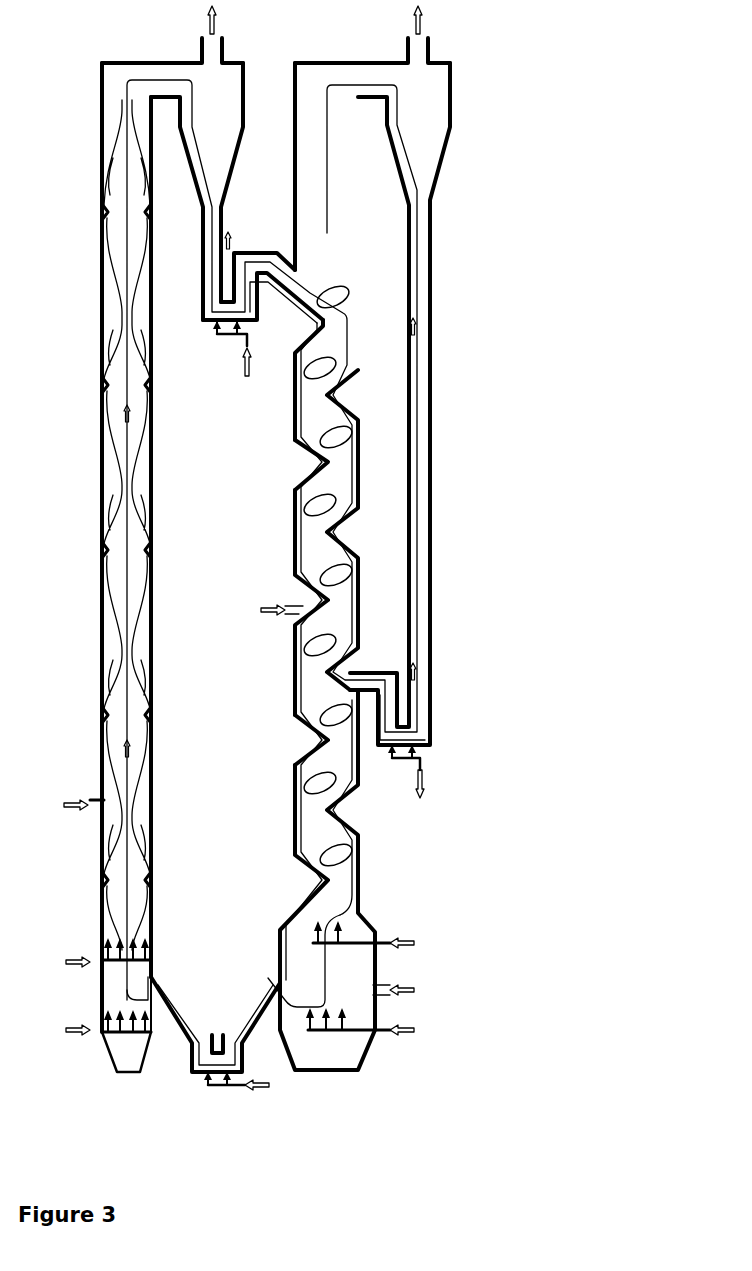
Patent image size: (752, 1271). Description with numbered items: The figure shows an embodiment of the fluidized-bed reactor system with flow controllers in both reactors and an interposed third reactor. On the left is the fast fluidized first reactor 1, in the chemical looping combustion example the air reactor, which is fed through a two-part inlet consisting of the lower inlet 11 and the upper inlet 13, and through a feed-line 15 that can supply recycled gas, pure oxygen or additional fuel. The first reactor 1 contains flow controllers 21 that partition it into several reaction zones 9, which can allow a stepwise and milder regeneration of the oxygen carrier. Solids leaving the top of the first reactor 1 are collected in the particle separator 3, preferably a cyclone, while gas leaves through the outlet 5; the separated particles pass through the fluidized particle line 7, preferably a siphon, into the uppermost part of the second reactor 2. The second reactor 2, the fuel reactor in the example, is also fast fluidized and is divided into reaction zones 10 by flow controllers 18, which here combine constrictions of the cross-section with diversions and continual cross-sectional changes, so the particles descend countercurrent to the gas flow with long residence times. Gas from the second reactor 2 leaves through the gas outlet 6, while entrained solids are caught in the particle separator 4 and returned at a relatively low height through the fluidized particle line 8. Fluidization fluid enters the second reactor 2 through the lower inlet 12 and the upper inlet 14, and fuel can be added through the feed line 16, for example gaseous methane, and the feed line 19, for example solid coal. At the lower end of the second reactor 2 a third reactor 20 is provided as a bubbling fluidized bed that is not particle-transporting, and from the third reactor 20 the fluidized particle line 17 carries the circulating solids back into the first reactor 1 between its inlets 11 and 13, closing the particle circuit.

The first reactor 1 is at (100, 590).
The second reactor 2 is at (295, 545).
The particle separator 3 is at (237, 165).
The particle separator 4 is at (393, 165).
The outlet 5 is at (205, 36).
The gas outlet 6 is at (408, 36).
The particle line 7 is at (212, 322).
The particle line 8 is at (392, 748).
The reaction zones 9 is at (140, 517).
The reaction zones 10 is at (327, 462).
The inlet 11 is at (86, 1032).
The inlet 12 is at (385, 1027).
The inlet 13 is at (86, 966).
The inlet 14 is at (385, 940).
The feed-line 15 is at (86, 808).
The feed line 16 is at (385, 985).
The particle line 17 is at (205, 1070).
The flow controllers 18 is at (310, 745).
The feed line 19 is at (275, 622).
The third reactor 20 is at (280, 950).
The flow controllers 21 is at (100, 378).